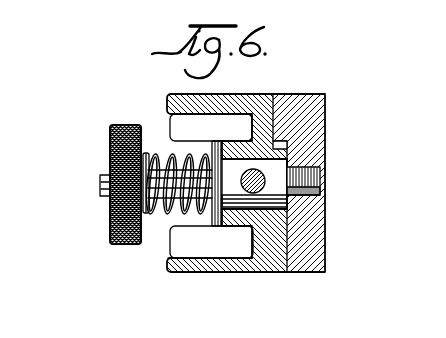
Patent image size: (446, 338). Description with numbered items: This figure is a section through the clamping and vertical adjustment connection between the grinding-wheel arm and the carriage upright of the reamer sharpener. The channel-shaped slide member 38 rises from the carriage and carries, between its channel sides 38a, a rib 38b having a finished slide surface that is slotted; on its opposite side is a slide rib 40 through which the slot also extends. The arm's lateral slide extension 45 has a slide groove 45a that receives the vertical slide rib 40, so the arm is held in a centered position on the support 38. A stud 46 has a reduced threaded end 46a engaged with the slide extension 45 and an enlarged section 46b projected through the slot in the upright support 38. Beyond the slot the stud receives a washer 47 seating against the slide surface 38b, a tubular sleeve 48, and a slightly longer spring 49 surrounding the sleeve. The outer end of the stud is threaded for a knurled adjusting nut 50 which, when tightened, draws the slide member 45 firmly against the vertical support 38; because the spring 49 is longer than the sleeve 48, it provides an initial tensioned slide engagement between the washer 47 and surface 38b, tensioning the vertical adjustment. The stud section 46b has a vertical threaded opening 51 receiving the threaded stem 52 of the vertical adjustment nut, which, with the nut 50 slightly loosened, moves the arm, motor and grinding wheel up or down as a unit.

The channel-shaped slide member 38 is at (186, 277).
The channel sides 38a is at (189, 96).
The rib 38b is at (196, 236).
The slide rib 40 is at (283, 230).
The lateral slide extension 45 is at (307, 100).
The slide groove 45a is at (283, 147).
The stud 46 is at (100, 186).
The reduced threaded end 46a is at (318, 180).
The enlarged section 46b is at (283, 202).
The washer 47 is at (213, 228).
The tubular sleeve 48 is at (169, 166).
The spring 49 is at (150, 156).
The knurled adjusting nut 50 is at (110, 226).
The vertical threaded opening 51 is at (240, 182).
The threaded stem 52 is at (250, 176).